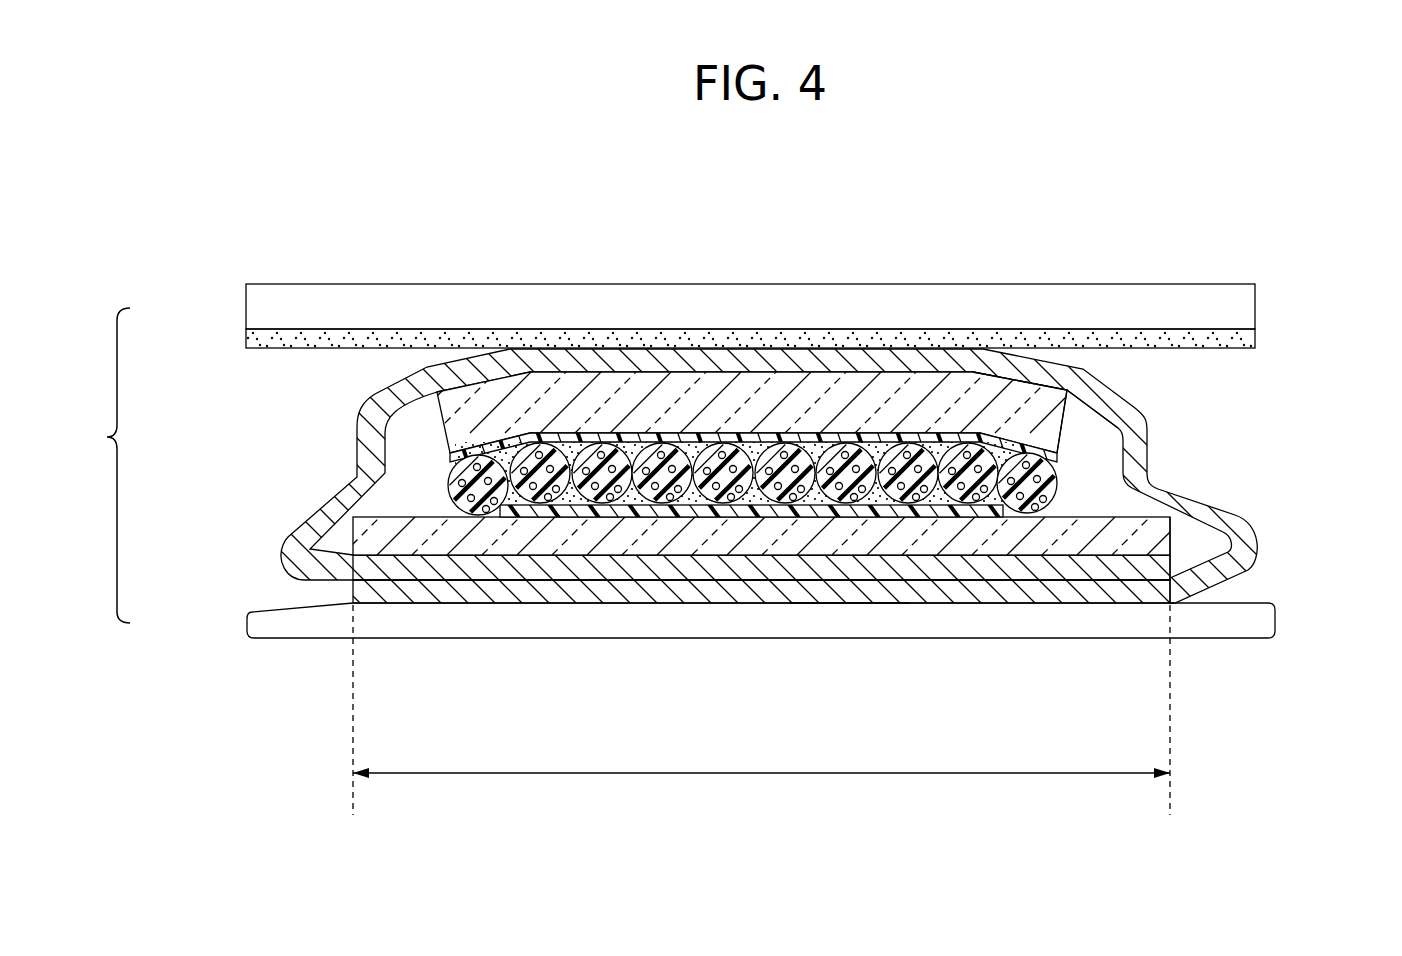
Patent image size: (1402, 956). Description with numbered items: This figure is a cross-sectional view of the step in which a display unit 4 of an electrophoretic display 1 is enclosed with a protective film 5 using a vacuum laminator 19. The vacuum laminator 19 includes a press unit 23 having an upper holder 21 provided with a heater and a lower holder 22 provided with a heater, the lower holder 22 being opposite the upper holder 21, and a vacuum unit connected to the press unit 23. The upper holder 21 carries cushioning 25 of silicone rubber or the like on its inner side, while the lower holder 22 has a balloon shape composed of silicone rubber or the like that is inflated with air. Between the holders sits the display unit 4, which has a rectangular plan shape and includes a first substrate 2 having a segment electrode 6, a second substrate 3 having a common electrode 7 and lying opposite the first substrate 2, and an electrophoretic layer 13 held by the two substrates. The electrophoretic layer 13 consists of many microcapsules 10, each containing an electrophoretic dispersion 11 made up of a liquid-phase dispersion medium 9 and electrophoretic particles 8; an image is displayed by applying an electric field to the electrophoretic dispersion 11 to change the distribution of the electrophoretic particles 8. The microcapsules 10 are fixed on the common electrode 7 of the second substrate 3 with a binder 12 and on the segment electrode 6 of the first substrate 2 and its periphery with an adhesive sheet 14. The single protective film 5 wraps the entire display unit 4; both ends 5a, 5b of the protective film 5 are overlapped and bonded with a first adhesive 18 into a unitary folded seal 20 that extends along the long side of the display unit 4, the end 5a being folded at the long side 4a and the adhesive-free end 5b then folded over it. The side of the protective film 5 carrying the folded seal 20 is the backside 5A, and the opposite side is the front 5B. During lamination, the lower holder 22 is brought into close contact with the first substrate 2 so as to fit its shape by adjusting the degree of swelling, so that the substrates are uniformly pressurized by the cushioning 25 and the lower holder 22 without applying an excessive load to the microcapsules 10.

The electrophoretic display 1 is at (1322, 355).
The first substrate 2 is at (1153, 548).
The second substrate 3 is at (1018, 390).
The display unit 4 is at (1101, 450).
The long side 4a is at (355, 533).
The protective film 5 is at (1140, 447).
The backside 5A is at (398, 612).
The front 5B is at (365, 399).
The end 5a is at (760, 570).
The end 5b is at (848, 600).
The segment electrode 6 is at (888, 512).
The common electrode 7 is at (883, 435).
The electrophoretic particles 8 is at (1028, 503).
The liquid-phase dispersion medium 9 is at (1045, 505).
The microcapsule 10 is at (1078, 489).
The electrophoretic dispersion 11 is at (1008, 510).
The binder 12 is at (583, 440).
The electrophoretic layer 13 is at (420, 482).
The adhesive sheet 14 is at (683, 512).
The first adhesive 18 is at (598, 580).
The vacuum laminator 19 is at (348, 279).
The folded seal 20 is at (466, 606).
The upper holder 21 is at (245, 307).
The lower holder 22 is at (247, 613).
The press unit 23 is at (100, 465).
The cushioning 25 is at (243, 350).